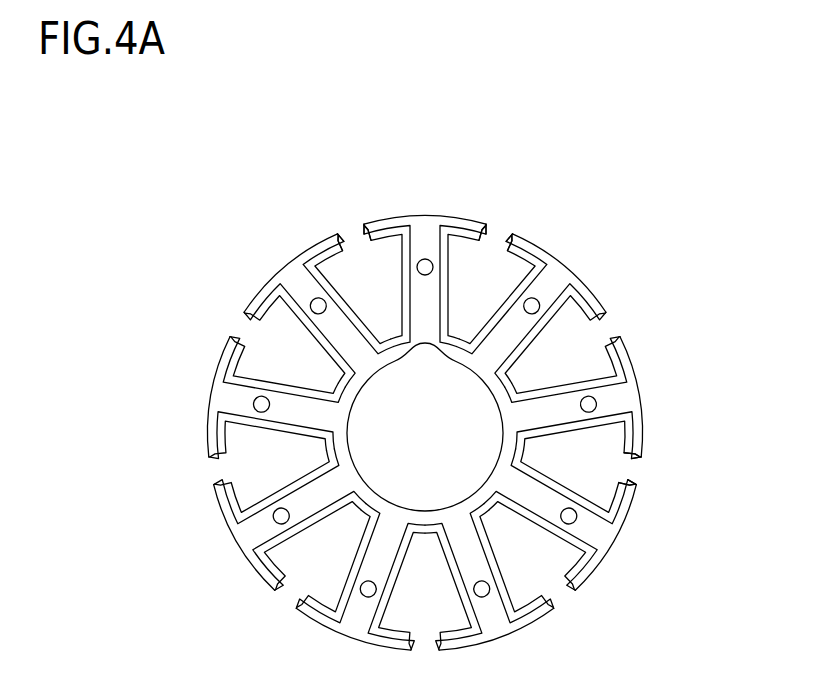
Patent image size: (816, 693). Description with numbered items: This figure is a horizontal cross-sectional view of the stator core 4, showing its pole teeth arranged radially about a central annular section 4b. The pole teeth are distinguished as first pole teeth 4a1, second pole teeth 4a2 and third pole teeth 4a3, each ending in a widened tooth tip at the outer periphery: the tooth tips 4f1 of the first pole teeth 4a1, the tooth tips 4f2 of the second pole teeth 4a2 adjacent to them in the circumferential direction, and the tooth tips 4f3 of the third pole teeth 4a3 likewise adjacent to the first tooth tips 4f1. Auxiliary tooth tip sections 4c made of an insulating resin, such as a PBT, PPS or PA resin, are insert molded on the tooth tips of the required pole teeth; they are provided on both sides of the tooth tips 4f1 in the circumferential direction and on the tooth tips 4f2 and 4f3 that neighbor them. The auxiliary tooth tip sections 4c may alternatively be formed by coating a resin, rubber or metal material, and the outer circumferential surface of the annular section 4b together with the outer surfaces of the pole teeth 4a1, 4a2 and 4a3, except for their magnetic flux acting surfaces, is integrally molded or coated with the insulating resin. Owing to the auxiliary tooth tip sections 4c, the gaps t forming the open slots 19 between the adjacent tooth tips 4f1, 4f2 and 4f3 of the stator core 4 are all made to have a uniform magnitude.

The stator core 4 is at (302, 212).
The first pole teeth 4a1 is at (418, 245).
The second pole teeth 4a2 is at (543, 280).
The third pole teeth 4a3 is at (307, 290).
The annular section 4b is at (353, 387).
The auxiliary tooth tip sections 4c is at (347, 242).
The tooth tips of the first pole teeth 4f1 is at (427, 214).
The tooth tips of the second pole teeth 4f2 is at (571, 277).
The tooth tips of the third pole teeth 4f3 is at (641, 404).
The open slots 19 is at (595, 360).